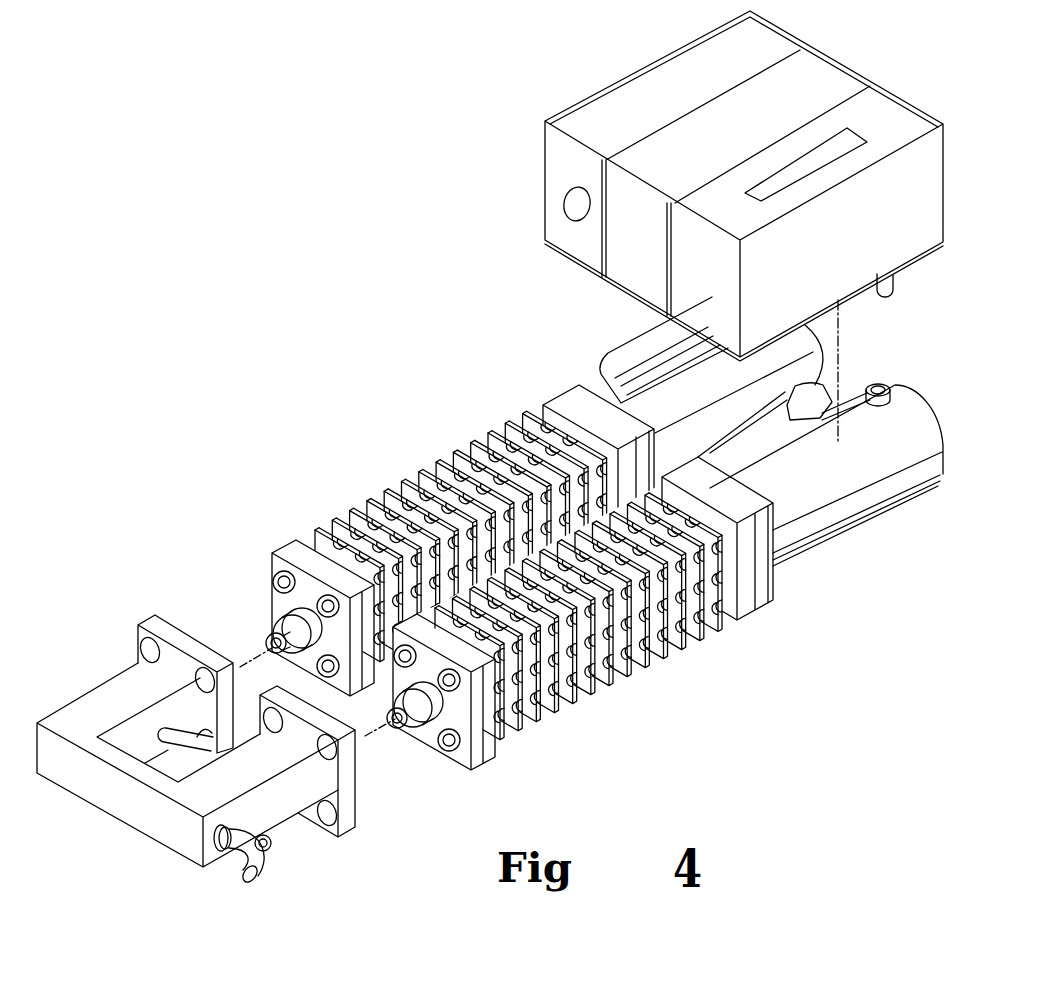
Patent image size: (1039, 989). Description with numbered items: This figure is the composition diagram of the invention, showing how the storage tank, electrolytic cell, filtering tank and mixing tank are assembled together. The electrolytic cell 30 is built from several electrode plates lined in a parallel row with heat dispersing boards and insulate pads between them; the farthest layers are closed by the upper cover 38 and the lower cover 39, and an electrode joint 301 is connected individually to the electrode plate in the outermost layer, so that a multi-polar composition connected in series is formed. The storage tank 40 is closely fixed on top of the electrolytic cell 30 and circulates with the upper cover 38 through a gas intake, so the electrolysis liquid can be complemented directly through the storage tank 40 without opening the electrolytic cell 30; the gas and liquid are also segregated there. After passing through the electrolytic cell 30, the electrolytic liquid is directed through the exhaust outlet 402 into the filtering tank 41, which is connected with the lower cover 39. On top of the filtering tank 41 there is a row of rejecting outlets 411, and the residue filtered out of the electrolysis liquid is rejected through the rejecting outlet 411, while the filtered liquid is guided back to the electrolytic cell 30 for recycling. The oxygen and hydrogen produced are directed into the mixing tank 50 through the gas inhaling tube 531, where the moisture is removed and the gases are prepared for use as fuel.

The electrolytic cell 30 is at (440, 431).
The upper cover 38 is at (757, 578).
The lower cover 39 is at (488, 740).
The storage tank 40 is at (838, 502).
The filtering tank 41 is at (307, 798).
The rejecting outlet 411 is at (250, 852).
The mixing tank 50 is at (845, 68).
The gas inhaling tube 531 is at (893, 293).
The electrode joint 301 is at (282, 636).
The exhaust outlet 402 is at (264, 632).